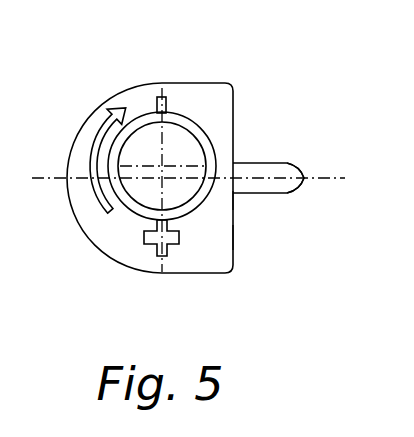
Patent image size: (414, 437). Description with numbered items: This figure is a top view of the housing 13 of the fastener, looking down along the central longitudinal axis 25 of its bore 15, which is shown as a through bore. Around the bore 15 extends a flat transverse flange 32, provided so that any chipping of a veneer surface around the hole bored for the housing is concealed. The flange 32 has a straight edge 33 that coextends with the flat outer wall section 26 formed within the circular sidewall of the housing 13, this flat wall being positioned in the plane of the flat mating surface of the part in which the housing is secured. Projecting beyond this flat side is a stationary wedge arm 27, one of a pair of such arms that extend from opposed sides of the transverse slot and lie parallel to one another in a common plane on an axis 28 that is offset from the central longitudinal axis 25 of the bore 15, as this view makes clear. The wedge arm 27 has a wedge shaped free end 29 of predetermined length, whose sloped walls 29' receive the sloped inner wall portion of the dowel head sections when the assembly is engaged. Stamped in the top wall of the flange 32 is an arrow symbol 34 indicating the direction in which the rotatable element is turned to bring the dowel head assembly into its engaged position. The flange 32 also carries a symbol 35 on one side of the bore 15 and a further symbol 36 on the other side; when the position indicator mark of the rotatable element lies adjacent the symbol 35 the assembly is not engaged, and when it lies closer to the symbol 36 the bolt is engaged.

The housing 13 is at (98, 79).
The bore 15 is at (143, 203).
The central longitudinal axis 25 is at (170, 166).
The flat outer wall section 26 is at (235, 199).
The wedge arm 27 is at (260, 167).
The axis 28 is at (289, 185).
The wedge shaped free end 29 is at (344, 175).
The sloped walls 29' is at (338, 152).
The flat transverse flange 32 is at (210, 97).
The straight edge 33 is at (236, 236).
The arrow symbol 34 is at (97, 150).
The symbol 35 is at (152, 237).
The further symbol 36 is at (165, 100).